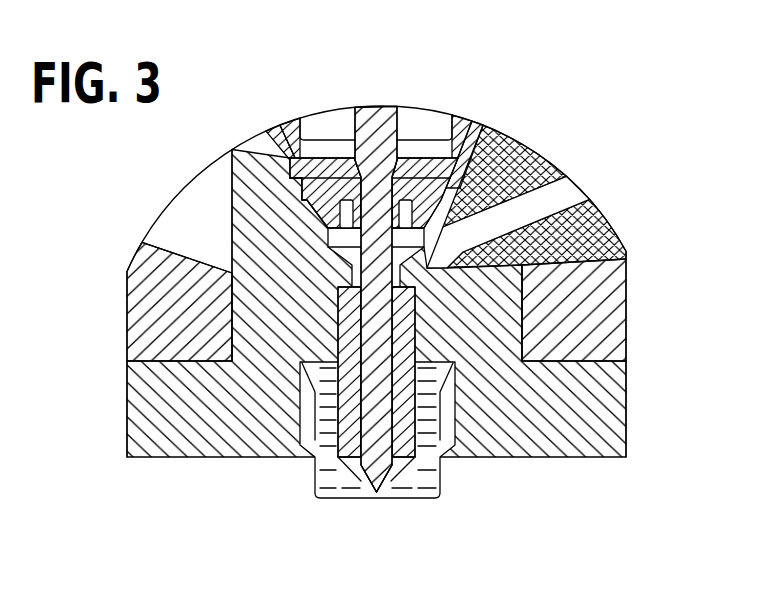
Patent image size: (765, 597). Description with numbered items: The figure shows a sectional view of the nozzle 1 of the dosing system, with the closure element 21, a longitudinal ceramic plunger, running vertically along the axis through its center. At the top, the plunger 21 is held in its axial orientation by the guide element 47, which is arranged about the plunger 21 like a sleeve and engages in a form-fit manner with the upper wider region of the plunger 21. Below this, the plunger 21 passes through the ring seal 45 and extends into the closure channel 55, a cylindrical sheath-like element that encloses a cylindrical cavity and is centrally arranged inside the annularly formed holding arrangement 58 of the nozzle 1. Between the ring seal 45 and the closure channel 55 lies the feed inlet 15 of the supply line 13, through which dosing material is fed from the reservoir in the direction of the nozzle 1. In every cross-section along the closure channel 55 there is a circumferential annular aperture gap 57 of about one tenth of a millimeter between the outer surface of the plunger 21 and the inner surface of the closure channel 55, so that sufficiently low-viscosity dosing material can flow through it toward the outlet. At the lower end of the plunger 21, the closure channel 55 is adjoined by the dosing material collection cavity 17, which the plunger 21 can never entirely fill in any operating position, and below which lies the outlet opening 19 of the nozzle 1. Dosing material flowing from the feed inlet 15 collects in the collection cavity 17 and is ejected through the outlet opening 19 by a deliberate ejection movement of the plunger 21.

The nozzle 1 is at (378, 321).
The supply line 13 is at (520, 205).
The feed inlet 15 is at (625, 257).
The dosing material collection cavity 17 is at (363, 483).
The outlet opening 19 is at (374, 497).
The closure element 21 is at (380, 130).
The ring seal 45 is at (328, 240).
The guide element 47 is at (327, 125).
The closure channel 55 is at (436, 457).
The aperture gap 57 is at (415, 460).
The holding arrangement 58 is at (438, 395).